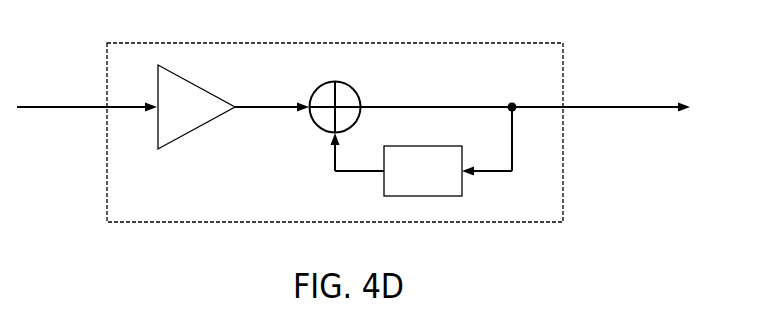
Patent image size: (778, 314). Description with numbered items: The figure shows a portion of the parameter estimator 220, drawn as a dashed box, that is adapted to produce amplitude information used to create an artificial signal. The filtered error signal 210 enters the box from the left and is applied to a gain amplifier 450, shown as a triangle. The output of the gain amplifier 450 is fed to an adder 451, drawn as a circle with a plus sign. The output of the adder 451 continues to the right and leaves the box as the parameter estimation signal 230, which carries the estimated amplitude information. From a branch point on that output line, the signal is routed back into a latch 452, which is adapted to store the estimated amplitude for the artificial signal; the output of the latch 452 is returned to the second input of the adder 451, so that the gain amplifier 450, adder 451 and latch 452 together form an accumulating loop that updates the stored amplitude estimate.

The parameter estimator 220 is at (335, 117).
The filtered error signal 210 is at (87, 96).
The gain amplifier 450 is at (196, 107).
The adder 451 is at (335, 95).
The latch 452 is at (423, 171).
The parameter estimation signal 230 is at (626, 95).